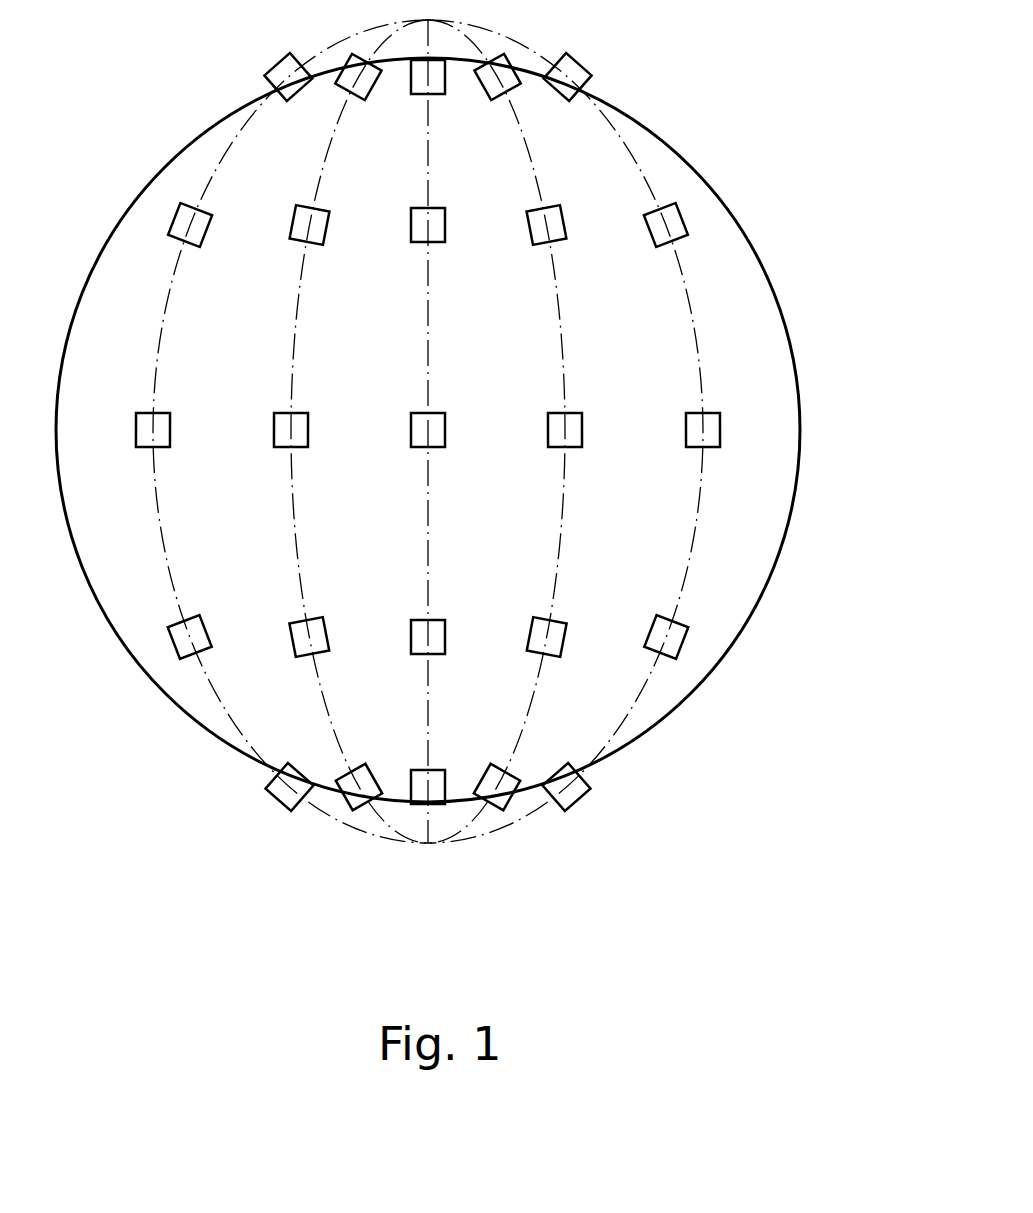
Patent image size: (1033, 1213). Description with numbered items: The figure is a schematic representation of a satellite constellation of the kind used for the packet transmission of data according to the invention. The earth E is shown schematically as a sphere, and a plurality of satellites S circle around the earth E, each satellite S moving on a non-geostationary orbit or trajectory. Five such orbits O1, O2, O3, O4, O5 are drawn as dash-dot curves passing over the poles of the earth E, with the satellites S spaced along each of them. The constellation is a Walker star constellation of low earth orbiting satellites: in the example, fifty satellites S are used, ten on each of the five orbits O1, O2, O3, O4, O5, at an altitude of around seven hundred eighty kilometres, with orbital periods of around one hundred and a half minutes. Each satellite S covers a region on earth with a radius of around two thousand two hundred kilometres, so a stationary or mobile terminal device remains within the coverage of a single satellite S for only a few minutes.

The earth E is at (705, 680).
The satellites S is at (680, 225).
The orbit O1 is at (238, 750).
The orbit O2 is at (313, 673).
The orbit O3 is at (425, 825).
The orbit O4 is at (538, 678).
The orbit O5 is at (635, 705).